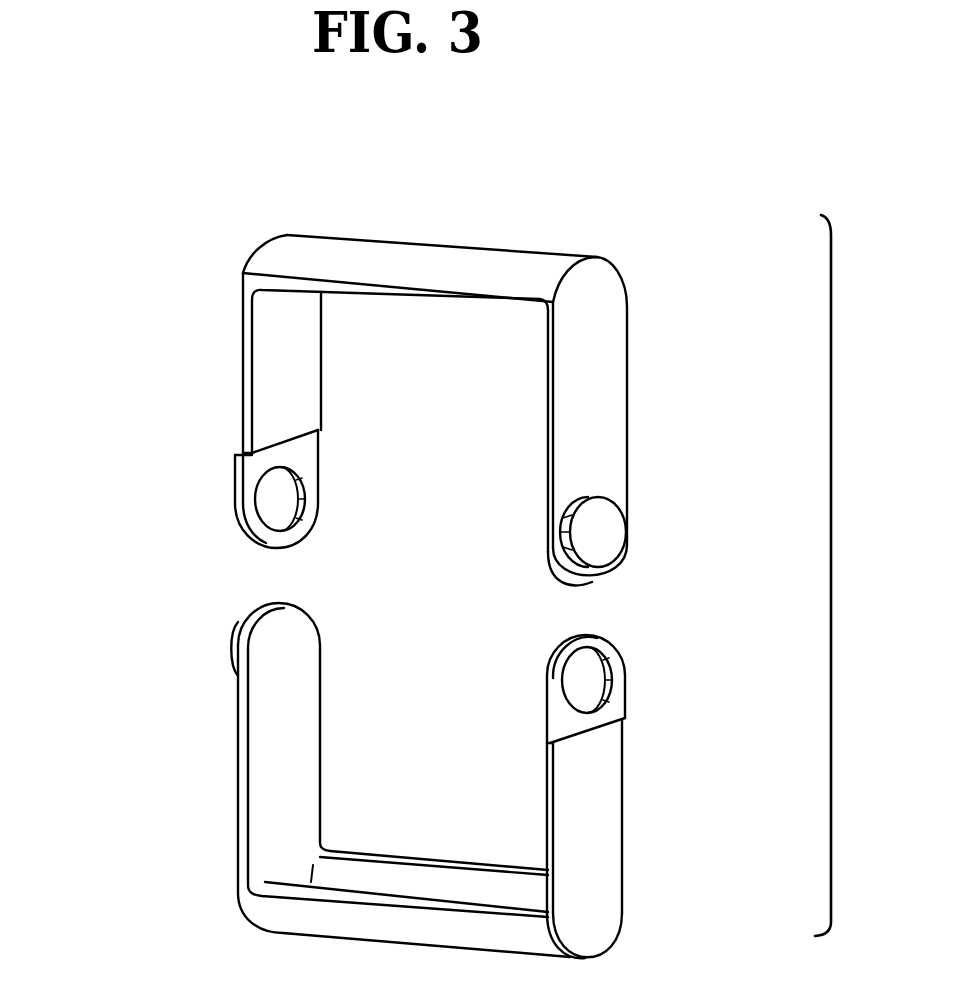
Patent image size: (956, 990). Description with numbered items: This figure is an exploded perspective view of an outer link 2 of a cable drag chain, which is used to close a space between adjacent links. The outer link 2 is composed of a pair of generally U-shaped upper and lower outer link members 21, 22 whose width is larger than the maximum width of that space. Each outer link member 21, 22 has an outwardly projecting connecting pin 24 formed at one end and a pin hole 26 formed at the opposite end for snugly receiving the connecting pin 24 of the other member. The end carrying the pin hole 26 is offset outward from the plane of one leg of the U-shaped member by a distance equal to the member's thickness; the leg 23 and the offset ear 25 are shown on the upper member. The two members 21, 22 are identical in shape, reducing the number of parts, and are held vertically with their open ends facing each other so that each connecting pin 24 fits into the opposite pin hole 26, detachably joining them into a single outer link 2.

The outer link 2 is at (655, 295).
The upper outer link member 21 is at (451, 260).
The lower outer link member 22 is at (600, 912).
The arm 23 is at (613, 418).
The connecting pin 24 is at (613, 535).
The ear portion 25 is at (237, 468).
The pin hole 26 is at (267, 503).